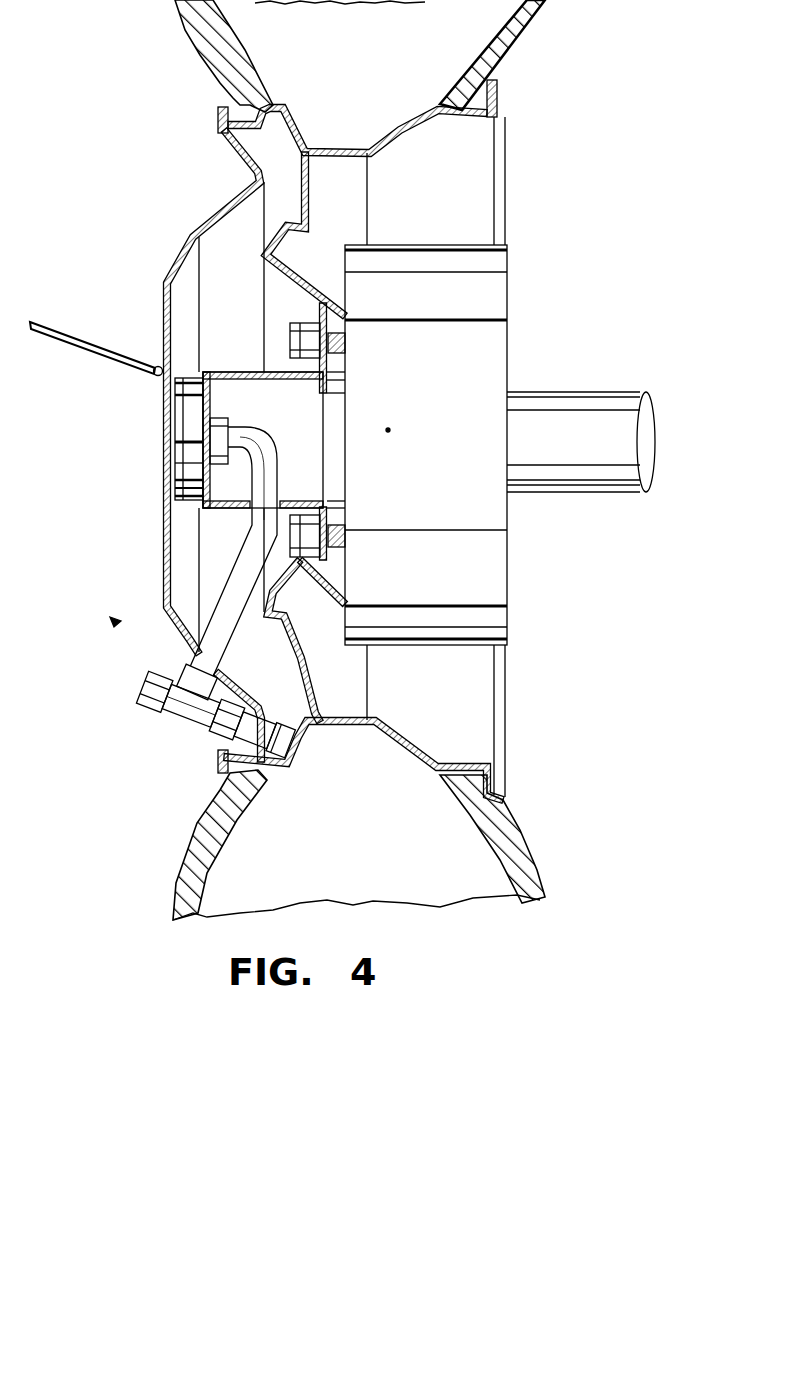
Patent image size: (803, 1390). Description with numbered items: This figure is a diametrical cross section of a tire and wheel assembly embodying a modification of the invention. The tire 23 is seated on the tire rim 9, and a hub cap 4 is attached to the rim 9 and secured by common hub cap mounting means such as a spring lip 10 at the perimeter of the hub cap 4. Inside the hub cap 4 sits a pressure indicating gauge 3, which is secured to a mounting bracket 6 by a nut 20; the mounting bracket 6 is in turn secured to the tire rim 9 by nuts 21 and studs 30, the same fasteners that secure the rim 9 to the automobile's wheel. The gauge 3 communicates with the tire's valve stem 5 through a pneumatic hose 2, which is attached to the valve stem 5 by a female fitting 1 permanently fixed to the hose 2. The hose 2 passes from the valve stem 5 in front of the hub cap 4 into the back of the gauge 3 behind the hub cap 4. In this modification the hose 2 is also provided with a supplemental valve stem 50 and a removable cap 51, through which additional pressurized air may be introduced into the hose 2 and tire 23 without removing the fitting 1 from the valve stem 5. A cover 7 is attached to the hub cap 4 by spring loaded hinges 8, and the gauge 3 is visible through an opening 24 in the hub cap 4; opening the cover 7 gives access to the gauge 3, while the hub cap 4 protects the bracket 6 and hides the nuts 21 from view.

The female fitting 1 is at (210, 732).
The pneumatic hose 2 is at (212, 642).
The pressure indicating gauge 3 is at (190, 465).
The hub cap 4 is at (205, 217).
The valve stem 5 is at (228, 740).
The mounting bracket 6 is at (203, 511).
The cover 7 is at (88, 342).
The spring loaded hinges 8 is at (157, 366).
The tire rim 9 is at (310, 190).
The spring lip 10 is at (219, 132).
The nut 20 is at (205, 437).
The nuts 21 is at (300, 333).
The tire 23 is at (218, 68).
The opening 24 is at (166, 494).
The studs 30 is at (290, 338).
The supplemental valve stem 50 is at (197, 710).
The removable cap 51 is at (155, 690).